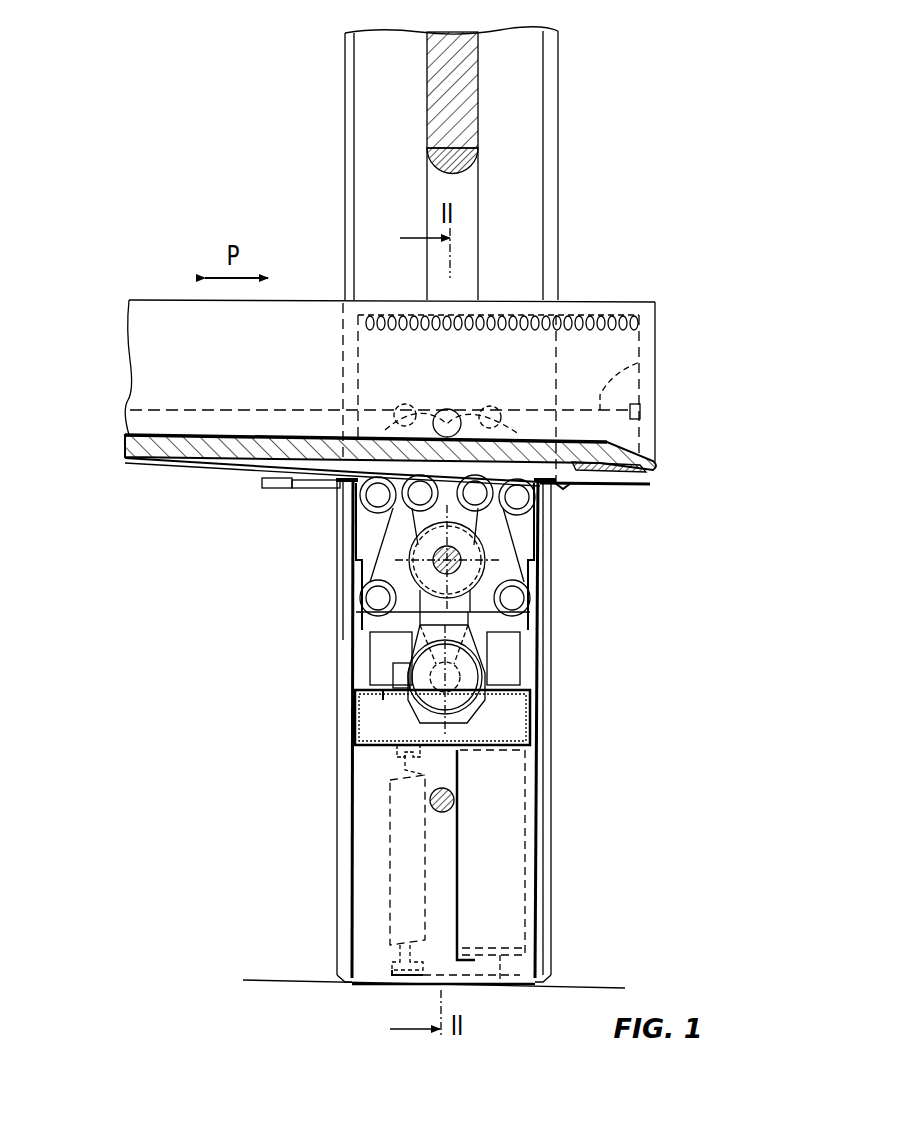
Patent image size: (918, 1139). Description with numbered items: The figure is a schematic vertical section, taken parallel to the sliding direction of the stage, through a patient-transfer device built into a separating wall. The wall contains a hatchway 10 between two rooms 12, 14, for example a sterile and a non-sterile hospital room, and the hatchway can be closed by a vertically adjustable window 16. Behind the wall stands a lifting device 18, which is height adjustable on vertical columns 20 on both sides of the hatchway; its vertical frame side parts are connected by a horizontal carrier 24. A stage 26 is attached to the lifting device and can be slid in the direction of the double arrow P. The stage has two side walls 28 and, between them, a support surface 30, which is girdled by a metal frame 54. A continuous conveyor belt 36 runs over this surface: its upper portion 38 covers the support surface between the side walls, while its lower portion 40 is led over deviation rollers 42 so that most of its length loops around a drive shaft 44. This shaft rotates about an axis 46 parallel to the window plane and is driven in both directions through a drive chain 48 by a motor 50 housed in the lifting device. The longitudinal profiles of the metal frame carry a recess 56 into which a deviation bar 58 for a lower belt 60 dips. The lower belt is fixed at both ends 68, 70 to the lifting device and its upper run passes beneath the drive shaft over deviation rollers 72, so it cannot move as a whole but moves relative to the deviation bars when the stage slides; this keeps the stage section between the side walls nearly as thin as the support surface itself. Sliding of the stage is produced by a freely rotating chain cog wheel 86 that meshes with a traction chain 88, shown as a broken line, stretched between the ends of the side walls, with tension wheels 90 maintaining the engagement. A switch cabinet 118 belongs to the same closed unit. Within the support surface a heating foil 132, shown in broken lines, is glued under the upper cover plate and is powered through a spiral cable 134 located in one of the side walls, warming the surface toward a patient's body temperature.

The hatchway 10 is at (578, 146).
The room 12 is at (249, 153).
The room 14 is at (668, 180).
The window 16 is at (480, 118).
The lifting device 18 is at (348, 648).
The vertical columns 20 is at (345, 851).
The horizontal carrier 24 is at (522, 718).
The stage 26 is at (195, 478).
The side walls 28 is at (303, 301).
The support surface 30 is at (140, 460).
The conveyor belt 36 is at (238, 436).
The upper portion 38 is at (372, 447).
The lower portion 40 is at (316, 455).
The deviation rollers 42 is at (388, 512).
The drive shaft 44 is at (455, 553).
The axis 46 is at (490, 588).
The drive chain 48 is at (470, 640).
The motor 50 is at (470, 670).
The metal frame 54 is at (593, 443).
The recess 56 is at (653, 468).
The deviation bar 58 is at (650, 443).
The lower belt 60 is at (358, 565).
The end 68 is at (312, 488).
The end 70 is at (543, 478).
The deviation rollers 72 is at (378, 497).
The cog wheel 86 is at (447, 410).
The traction chain 88 is at (640, 362).
The tension wheels 90 is at (407, 405).
The switch cabinet 118 is at (510, 834).
The heating foil 132 is at (243, 474).
The spiral cable 134 is at (580, 316).